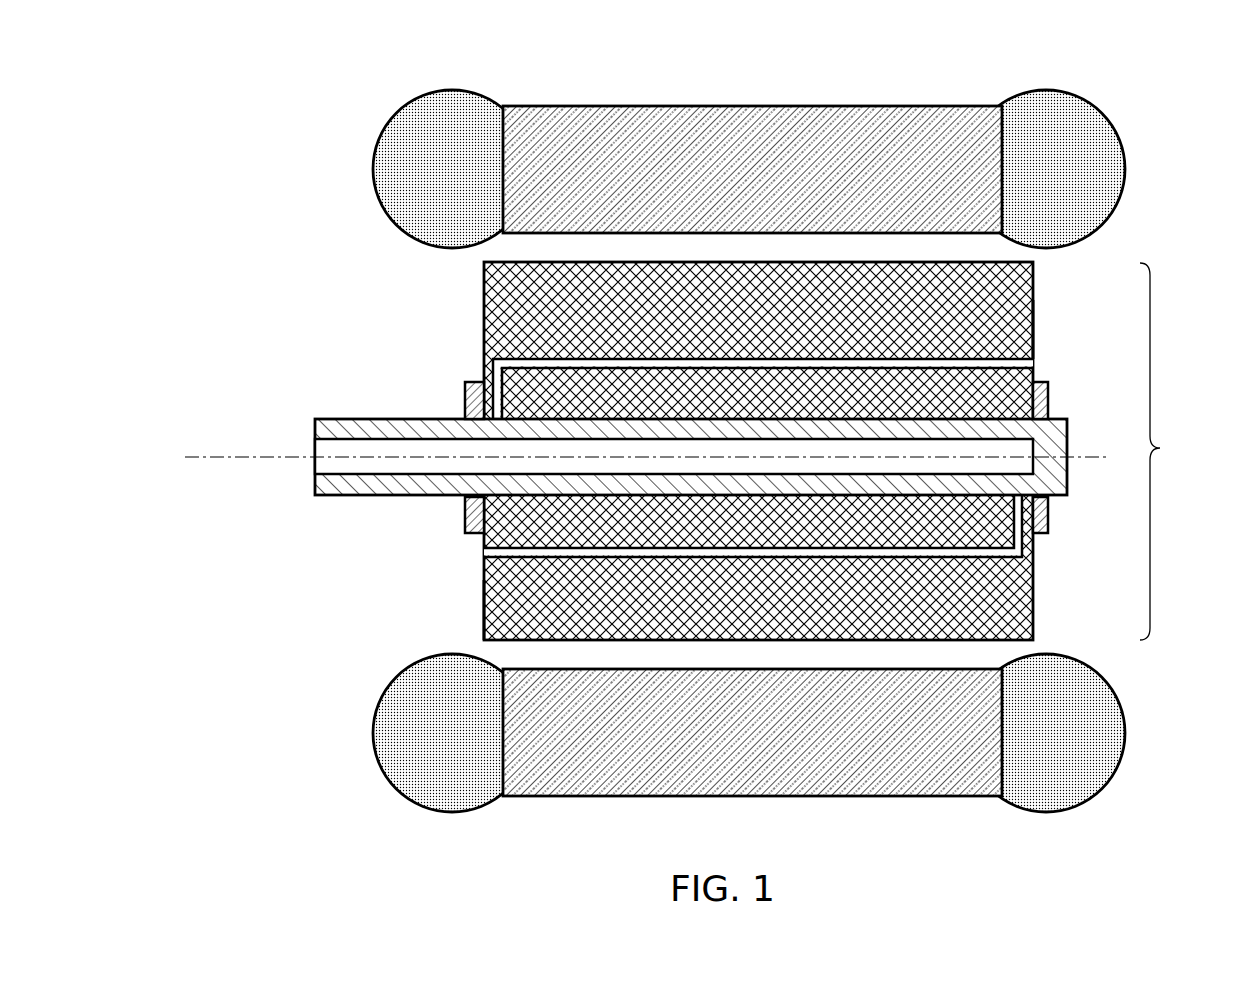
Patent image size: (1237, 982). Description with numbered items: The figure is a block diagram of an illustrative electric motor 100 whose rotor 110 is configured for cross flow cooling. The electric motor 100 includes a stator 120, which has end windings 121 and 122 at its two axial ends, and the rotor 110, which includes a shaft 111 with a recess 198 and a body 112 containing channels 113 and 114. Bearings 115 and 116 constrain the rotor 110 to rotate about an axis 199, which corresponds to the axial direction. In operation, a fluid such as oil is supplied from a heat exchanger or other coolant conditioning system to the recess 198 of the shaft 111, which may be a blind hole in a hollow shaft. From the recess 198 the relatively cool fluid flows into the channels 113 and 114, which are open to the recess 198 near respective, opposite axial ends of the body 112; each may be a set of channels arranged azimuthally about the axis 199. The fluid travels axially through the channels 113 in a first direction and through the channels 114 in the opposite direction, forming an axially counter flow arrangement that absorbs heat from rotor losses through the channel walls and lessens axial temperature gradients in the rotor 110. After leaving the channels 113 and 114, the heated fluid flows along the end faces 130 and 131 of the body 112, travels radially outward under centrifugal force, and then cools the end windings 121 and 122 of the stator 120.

The electric motor 100 is at (776, 41).
The rotor 110 is at (1179, 451).
The shaft 111 is at (353, 419).
The body 112 is at (776, 305).
The channel 113 is at (1036, 340).
The channel 114 is at (1033, 640).
The bearing 115 is at (460, 381).
The bearing 116 is at (1050, 533).
The stator 120 is at (781, 181).
The end winding 121 is at (474, 181).
The end winding 122 is at (1067, 181).
The end face 130 is at (482, 620).
The end face 131 is at (1036, 345).
The recess 198 is at (780, 470).
The axis 199 is at (222, 456).